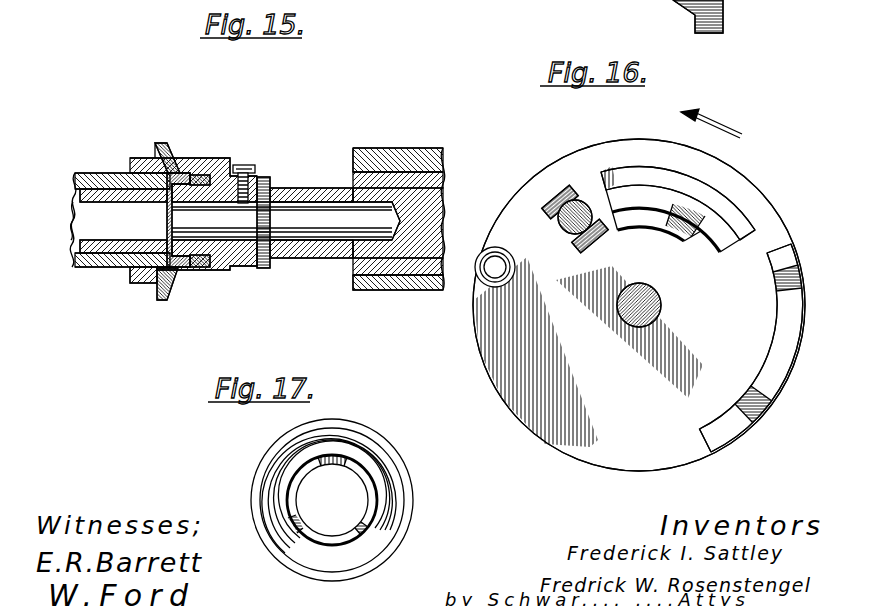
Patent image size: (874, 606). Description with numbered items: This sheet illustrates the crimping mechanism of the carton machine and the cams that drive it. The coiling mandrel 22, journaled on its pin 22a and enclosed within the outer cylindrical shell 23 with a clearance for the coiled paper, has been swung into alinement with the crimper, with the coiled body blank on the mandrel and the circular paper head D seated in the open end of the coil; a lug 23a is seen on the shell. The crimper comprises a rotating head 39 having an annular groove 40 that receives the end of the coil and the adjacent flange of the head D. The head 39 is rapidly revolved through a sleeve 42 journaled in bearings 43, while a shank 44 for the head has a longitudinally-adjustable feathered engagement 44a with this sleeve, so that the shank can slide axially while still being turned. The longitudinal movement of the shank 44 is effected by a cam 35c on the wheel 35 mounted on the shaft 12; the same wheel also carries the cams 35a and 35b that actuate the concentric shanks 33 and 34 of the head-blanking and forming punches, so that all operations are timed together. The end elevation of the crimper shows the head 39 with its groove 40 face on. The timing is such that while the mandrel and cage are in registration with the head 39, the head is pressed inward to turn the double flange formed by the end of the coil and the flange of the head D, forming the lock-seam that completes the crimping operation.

In FIG. 16, the shaft 12 is at (661, 303).
In FIG. 15, the coiling mandrel 22 is at (117, 268).
In FIG. 15, the pin 22a is at (78, 247).
In FIG. 15, the outer cylindrical shell 23 is at (130, 162).
In FIG. 15, the collar lug 23a is at (140, 283).
In FIG. 16, the shank of blanking punch 33 is at (558, 184).
In FIG. 16, the shank of forming punch 34 is at (578, 198).
In FIG. 16, the cam wheel 35 is at (725, 19).
In FIG. 16, the cam 35a is at (701, 188).
In FIG. 16, the cam 35b is at (702, 204).
In FIG. 16, the cam 35c is at (777, 384).
In FIG. 15, the rotating head 39 is at (176, 150).
In FIG. 17, the rotating head 39 is at (369, 432).
In FIG. 15, the annular groove 40 is at (200, 267).
In FIG. 17, the annular groove 40 is at (377, 479).
In FIG. 15, the sleeve 42 is at (390, 172).
In FIG. 15, the bearings 43 is at (432, 150).
In FIG. 15, the shank 44 is at (432, 211).
In FIG. 16, the shank 44 is at (496, 247).
In FIG. 15, the feathered engagement 44a is at (342, 258).
In FIG. 15, the paper head D is at (185, 195).